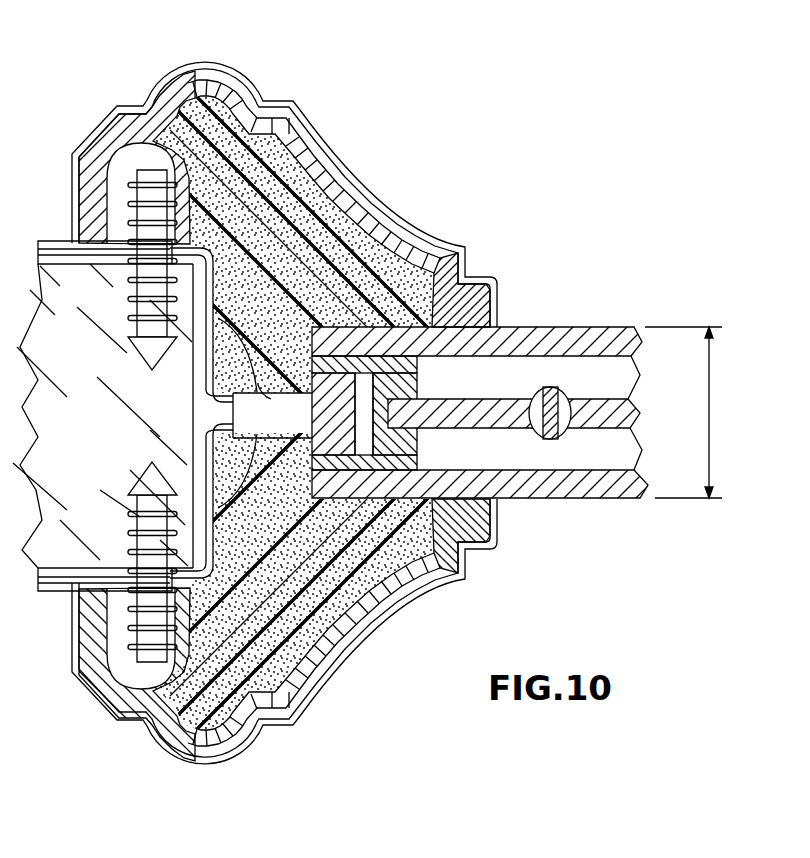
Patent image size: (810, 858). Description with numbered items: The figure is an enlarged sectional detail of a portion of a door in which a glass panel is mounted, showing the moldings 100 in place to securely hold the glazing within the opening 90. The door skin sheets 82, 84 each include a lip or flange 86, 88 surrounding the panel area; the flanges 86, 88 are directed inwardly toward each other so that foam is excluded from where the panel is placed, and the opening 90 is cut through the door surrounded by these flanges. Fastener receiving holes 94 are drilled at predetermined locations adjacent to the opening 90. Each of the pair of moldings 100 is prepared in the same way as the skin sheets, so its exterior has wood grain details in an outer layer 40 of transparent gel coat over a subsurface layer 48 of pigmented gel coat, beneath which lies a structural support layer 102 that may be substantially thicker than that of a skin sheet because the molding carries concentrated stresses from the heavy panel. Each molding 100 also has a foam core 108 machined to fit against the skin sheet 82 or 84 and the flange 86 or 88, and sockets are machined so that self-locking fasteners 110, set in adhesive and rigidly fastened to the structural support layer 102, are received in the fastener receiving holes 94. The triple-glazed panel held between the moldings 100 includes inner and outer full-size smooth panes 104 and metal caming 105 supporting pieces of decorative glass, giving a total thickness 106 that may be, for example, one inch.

The outer layer 40 is at (338, 170).
The subsurface layer 48 is at (372, 213).
The skin sheet 82 is at (55, 241).
The skin sheet 84 is at (50, 592).
The flange 86 is at (281, 400).
The flange 88 is at (272, 417).
The opening 90 is at (213, 405).
The fastener receiving holes 94 is at (127, 280).
The moldings 100 is at (322, 132).
The structural support layer 102 is at (427, 258).
The smooth panes 104 is at (590, 327).
The metal caming 105 is at (543, 390).
The total thickness 106 is at (722, 406).
The foam core 108 is at (209, 118).
The self-locking fasteners 110 is at (135, 360).